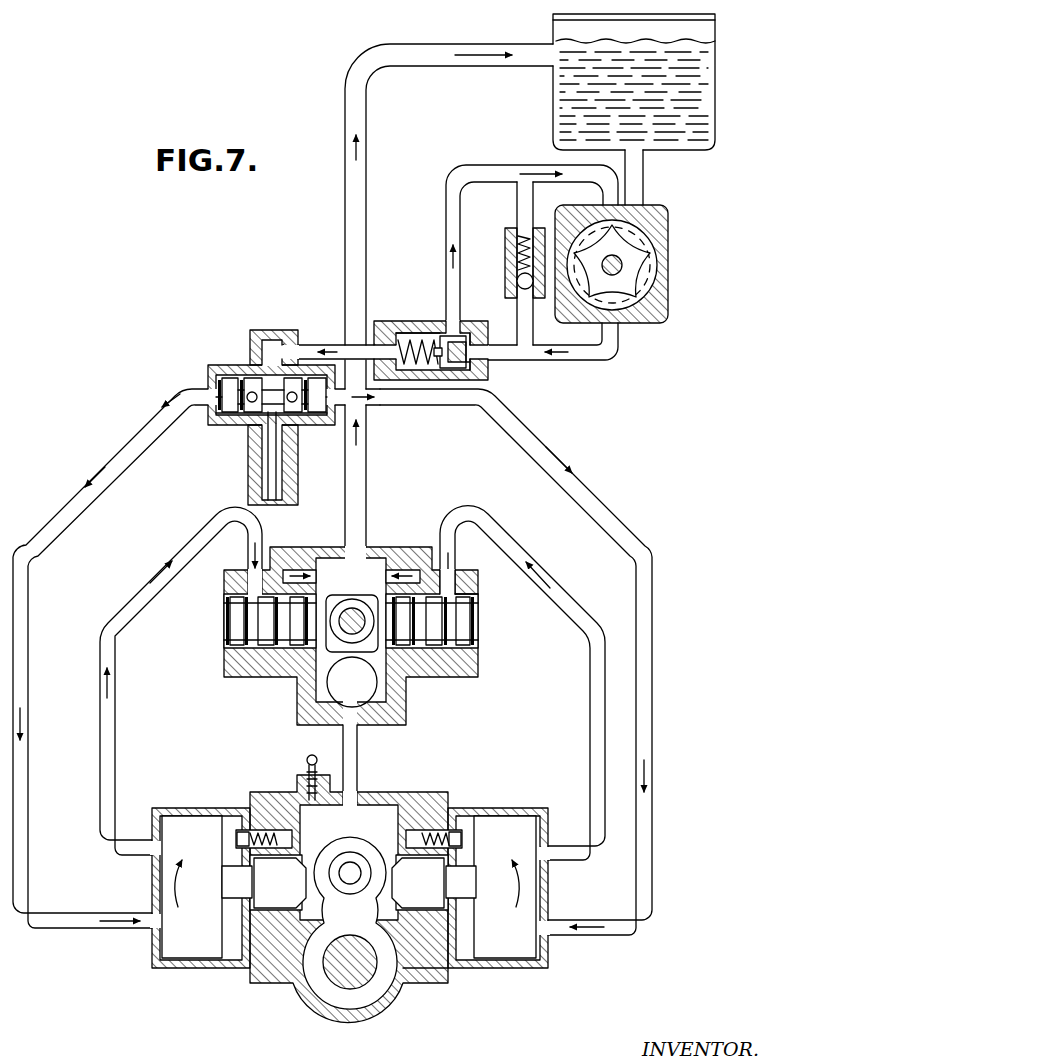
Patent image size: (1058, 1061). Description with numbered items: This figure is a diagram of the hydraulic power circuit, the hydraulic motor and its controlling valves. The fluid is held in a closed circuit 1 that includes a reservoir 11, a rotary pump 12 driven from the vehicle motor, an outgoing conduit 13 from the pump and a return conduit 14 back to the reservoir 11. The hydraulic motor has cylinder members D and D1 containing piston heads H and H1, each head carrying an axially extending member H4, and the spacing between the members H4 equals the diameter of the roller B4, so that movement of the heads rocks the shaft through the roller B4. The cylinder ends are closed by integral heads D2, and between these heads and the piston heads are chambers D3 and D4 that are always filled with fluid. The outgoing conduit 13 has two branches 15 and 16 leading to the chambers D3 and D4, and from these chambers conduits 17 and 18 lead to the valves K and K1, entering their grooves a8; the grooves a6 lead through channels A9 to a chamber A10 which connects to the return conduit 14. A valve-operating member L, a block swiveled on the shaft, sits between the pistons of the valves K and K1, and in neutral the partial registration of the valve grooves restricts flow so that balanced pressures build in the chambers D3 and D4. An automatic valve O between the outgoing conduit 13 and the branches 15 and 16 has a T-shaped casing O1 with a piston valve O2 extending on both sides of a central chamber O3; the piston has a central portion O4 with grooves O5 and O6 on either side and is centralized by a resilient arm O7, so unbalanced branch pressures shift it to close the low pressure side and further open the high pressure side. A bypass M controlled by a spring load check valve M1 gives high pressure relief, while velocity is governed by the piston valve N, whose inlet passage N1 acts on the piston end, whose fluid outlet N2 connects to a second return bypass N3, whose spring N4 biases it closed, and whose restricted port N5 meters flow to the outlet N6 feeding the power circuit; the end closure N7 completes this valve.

The closed circuit 1 is at (442, 161).
The reservoir 11 is at (717, 119).
The rotary pump 12 is at (667, 297).
The outgoing conduit 13 is at (600, 362).
The return conduit 14 is at (509, 69).
The branch 15 is at (118, 434).
The branch 16 is at (620, 527).
The conduit 17 is at (110, 758).
The conduit 18 is at (590, 776).
The bypass M is at (518, 207).
The spring load check valve M1 is at (506, 248).
The piston valve N is at (426, 327).
The fluid inlet passage N1 is at (481, 355).
The fluid outlet N2 is at (447, 333).
The second return fluid bypass N3 is at (445, 233).
The spring N4 is at (404, 322).
The restricted port N5 is at (446, 372).
The outlet N6 is at (388, 350).
The valve end cap N7 is at (487, 372).
The automatic valve O is at (258, 383).
The T-shaped casing O1 is at (246, 463).
The piston valve O2 is at (248, 390).
The central chamber O3 is at (270, 380).
The central portion O4 is at (248, 421).
The groove O5 is at (250, 380).
The groove O6 is at (293, 405).
The resilient arm O7 is at (262, 445).
The channel A9 is at (442, 548).
The chamber A10 is at (335, 562).
The groove a6 is at (412, 575).
The groove a8 is at (462, 597).
The valve-operating member L is at (358, 600).
The valve K is at (222, 634).
The valve K1 is at (490, 632).
The cylinder member D is at (196, 970).
The cylinder member D1 is at (505, 970).
The integral heads D2 is at (214, 812).
The chamber D3 is at (192, 887).
The chamber D4 is at (505, 887).
The piston head H is at (233, 968).
The piston head H1 is at (462, 968).
The member H4 is at (348, 883).
The roller B4 is at (377, 842).